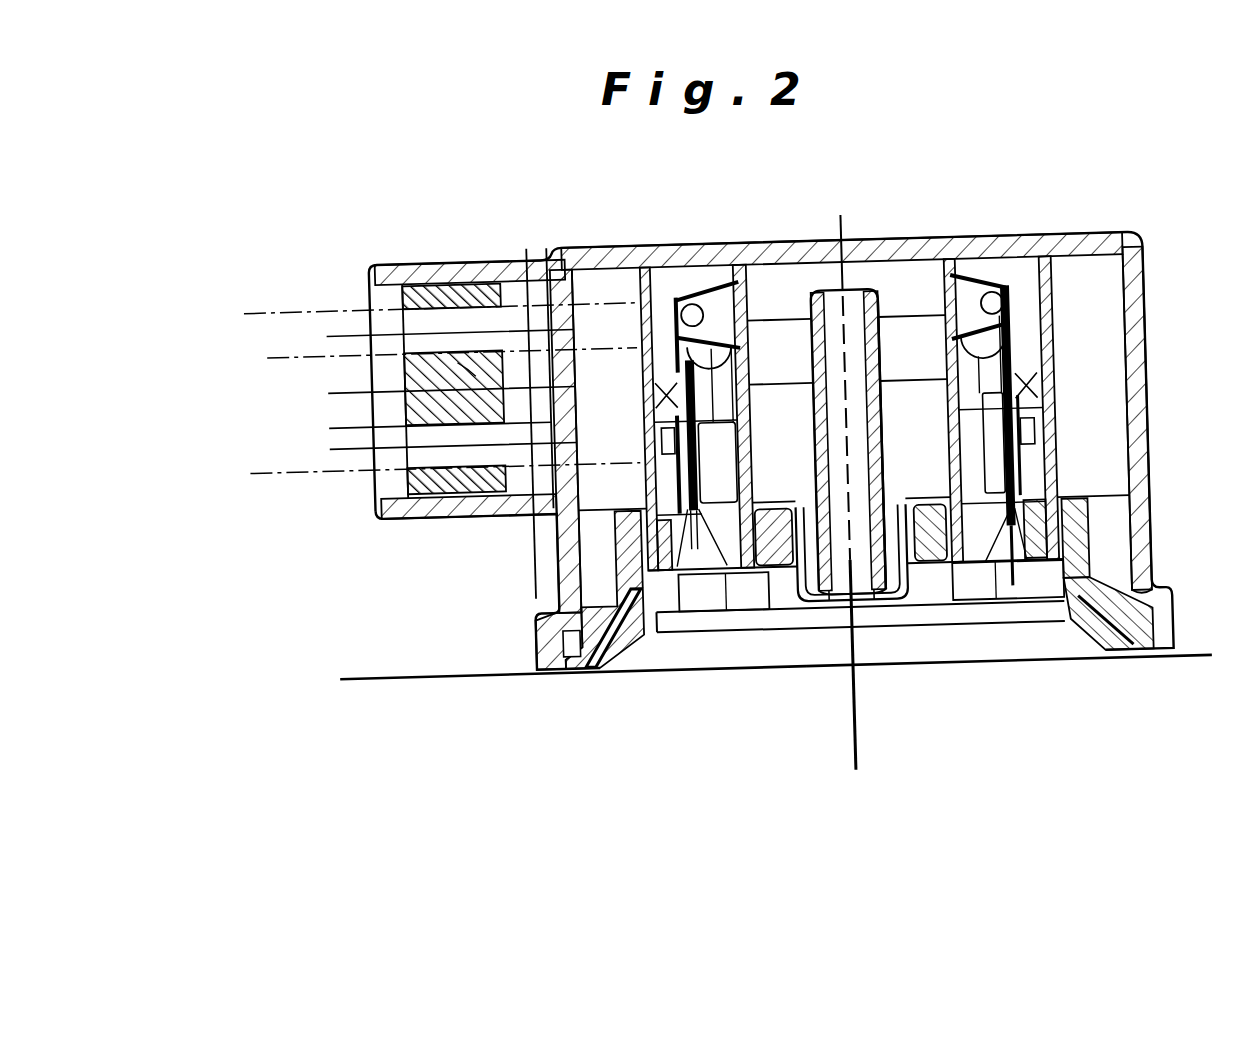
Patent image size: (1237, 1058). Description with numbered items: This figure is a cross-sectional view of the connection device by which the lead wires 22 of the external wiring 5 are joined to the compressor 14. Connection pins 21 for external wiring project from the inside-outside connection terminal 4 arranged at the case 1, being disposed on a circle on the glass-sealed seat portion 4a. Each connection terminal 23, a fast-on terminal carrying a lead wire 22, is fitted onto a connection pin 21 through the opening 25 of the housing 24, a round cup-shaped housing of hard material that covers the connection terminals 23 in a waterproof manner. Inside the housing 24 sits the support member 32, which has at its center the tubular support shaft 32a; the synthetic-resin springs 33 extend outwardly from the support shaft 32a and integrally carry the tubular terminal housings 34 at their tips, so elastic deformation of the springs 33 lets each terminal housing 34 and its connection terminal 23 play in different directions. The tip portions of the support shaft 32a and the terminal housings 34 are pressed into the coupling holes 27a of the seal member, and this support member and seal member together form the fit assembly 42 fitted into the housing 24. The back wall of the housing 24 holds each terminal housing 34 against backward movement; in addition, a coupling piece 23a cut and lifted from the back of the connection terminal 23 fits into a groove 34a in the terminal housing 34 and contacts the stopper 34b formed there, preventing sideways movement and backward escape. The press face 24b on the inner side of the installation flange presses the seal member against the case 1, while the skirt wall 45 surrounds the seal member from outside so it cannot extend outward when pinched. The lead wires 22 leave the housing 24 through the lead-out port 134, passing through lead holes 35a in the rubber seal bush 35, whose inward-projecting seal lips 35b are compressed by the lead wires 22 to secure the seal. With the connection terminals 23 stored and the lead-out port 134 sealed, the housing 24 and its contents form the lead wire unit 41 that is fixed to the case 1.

The case 1 is at (433, 670).
The inside-outside connection terminal 4 is at (697, 665).
The glass-sealed seat portion 4a is at (888, 668).
The external wiring 5 is at (257, 305).
The compressor 14 is at (372, 671).
The connection pin for external wiring 21 is at (746, 449).
The lead wire 22 is at (300, 430).
The connection terminal 23 is at (660, 300).
The coupling piece 23a is at (652, 474).
The housing 24 is at (1152, 404).
The press face 24b is at (577, 680).
The opening 25 is at (782, 596).
The coupling hole 27a is at (1065, 596).
The support member 32 is at (890, 303).
The support shaft 32a is at (883, 406).
The synthetic-resin spring 33 is at (772, 318).
The terminal housing 34 is at (650, 433).
The groove 34a is at (660, 265).
The stopper 34b is at (650, 388).
The seal bush 35 is at (443, 503).
The lead hole 35a is at (405, 316).
The seal lip 35b is at (460, 352).
The lead wire unit 41 is at (505, 232).
The fit assembly 42 is at (928, 576).
The skirt wall 45 is at (540, 660).
The lead-out port 134 is at (462, 263).